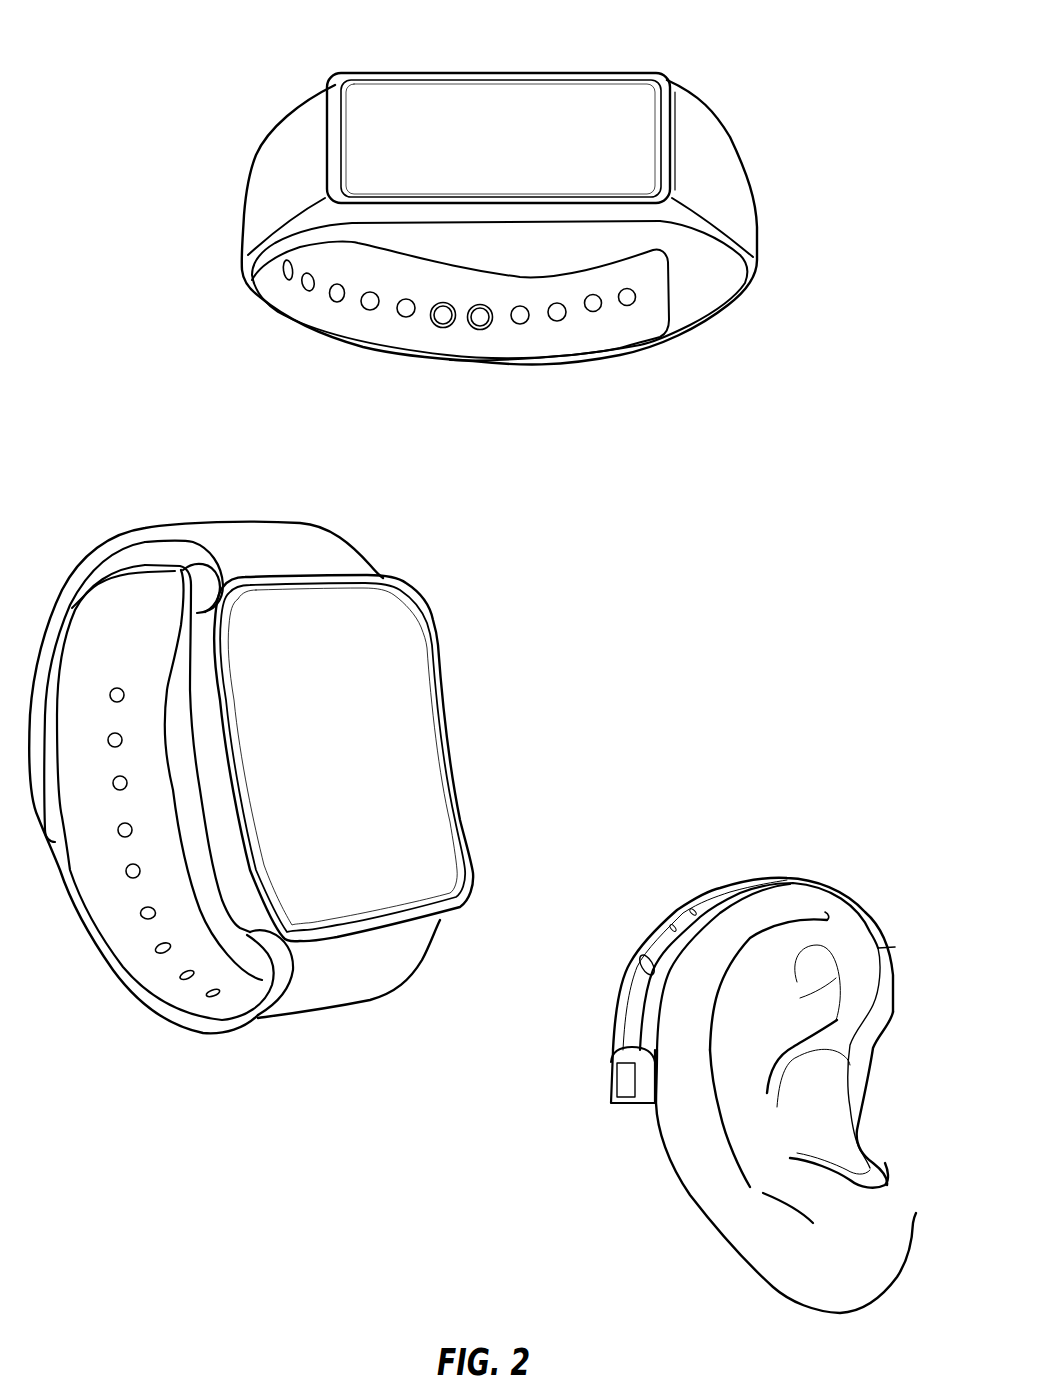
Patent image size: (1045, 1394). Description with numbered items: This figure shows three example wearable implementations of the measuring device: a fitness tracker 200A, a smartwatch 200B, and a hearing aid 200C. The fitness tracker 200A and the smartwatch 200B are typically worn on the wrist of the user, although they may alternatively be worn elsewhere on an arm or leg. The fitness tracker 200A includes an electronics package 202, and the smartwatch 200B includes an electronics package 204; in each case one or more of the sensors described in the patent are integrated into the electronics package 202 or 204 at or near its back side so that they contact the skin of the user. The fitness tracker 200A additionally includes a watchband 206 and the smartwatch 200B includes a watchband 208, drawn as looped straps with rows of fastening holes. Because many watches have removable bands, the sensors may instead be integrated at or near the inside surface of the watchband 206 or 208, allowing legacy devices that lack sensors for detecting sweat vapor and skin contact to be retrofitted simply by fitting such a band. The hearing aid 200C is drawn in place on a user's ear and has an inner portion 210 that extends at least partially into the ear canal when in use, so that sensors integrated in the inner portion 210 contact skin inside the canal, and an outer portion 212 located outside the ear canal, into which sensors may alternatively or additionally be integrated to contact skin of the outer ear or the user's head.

The fitness tracker 200A is at (743, 69).
The electronics package 202 is at (531, 103).
The watchband 206 is at (723, 184).
The smartwatch 200B is at (417, 538).
The electronics package 204 is at (397, 690).
The watchband 208 is at (207, 520).
The hearing aid 200C is at (850, 838).
The inner portion 210 is at (830, 1120).
The outer portion 212 is at (640, 958).